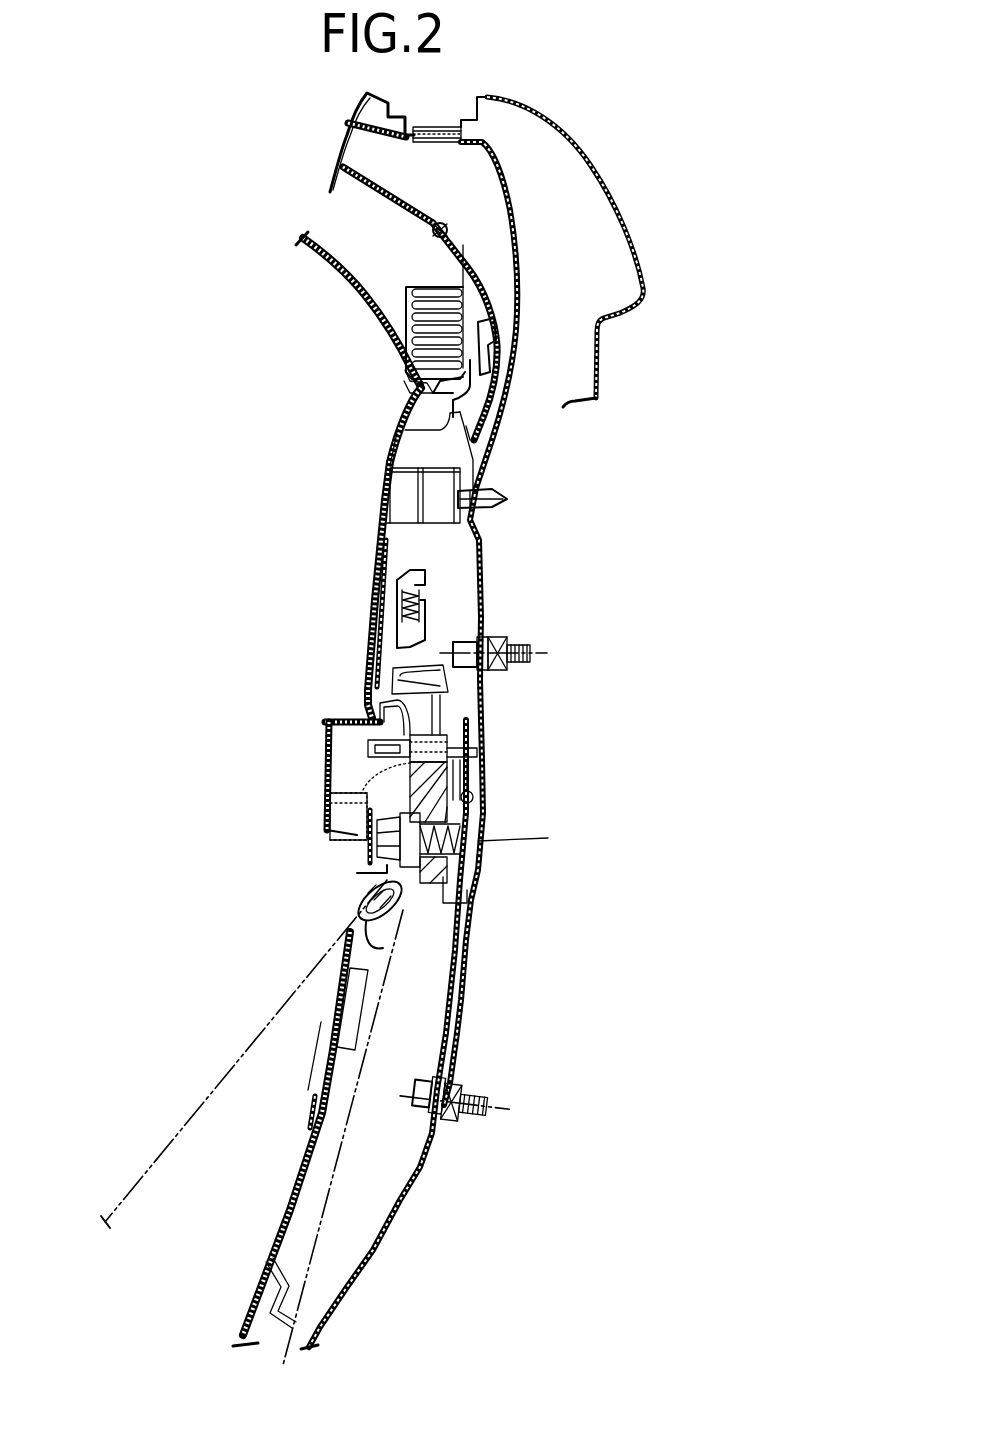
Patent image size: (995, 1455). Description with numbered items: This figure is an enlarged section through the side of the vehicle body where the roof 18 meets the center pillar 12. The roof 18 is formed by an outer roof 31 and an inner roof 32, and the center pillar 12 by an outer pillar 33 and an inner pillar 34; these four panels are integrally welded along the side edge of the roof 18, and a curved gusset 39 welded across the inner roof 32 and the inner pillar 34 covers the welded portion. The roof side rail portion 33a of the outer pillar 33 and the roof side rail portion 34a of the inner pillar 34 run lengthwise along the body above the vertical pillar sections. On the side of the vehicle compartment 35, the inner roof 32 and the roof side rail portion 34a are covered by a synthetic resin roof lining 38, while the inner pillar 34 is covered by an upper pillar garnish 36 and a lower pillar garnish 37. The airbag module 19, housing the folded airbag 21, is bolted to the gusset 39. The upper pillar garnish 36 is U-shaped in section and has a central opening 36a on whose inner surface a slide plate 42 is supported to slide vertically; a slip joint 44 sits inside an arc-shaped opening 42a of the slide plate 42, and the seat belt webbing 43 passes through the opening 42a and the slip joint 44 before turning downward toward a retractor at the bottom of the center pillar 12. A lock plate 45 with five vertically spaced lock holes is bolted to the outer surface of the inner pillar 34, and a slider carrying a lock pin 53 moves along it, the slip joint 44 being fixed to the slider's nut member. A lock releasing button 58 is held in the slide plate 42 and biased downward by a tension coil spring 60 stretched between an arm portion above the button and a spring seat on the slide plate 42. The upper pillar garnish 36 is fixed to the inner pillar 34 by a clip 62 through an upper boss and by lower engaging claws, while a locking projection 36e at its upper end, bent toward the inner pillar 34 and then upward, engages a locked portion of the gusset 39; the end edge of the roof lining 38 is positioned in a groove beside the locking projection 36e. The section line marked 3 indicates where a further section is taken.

The section line III 3 is at (232, 764).
The center pillar 12 is at (705, 405).
The roof 18 is at (270, 90).
The airbag module 19 is at (412, 281).
The airbag 21 is at (403, 328).
The outer roof 31 is at (352, 108).
The inner roof 32 is at (367, 133).
The outer pillar 33 is at (606, 377).
The roof side rail portion 33a is at (597, 178).
The inner pillar 34 is at (497, 618).
The roof side rail portion 34a is at (517, 224).
The vehicle compartment 35 is at (215, 506).
The upper pillar garnish 36 is at (368, 598).
The opening 36a is at (362, 690).
The locking projection 36e is at (472, 393).
The lower pillar garnish 37 is at (247, 1303).
The roof lining 38 is at (327, 263).
The gusset 39 is at (397, 190).
The slide plate 42 is at (325, 714).
The opening 42a is at (355, 878).
The webbing 43 is at (198, 1106).
The slip joint 44 is at (355, 919).
The lock plate 45 is at (452, 985).
The lock pin 53 is at (477, 708).
The lock releasing button 58 is at (328, 818).
The tension coil spring 60 is at (418, 593).
The clip 62 is at (495, 507).